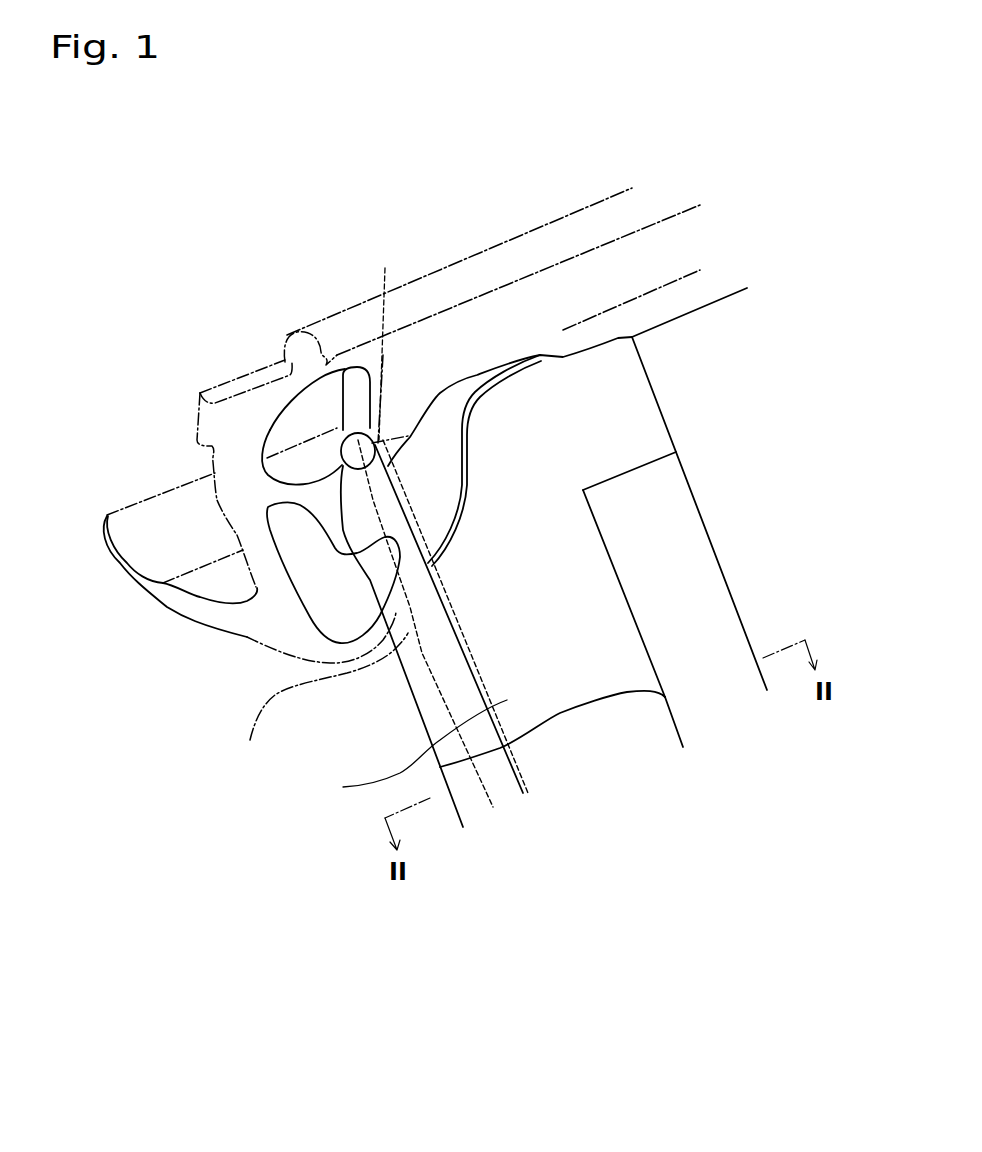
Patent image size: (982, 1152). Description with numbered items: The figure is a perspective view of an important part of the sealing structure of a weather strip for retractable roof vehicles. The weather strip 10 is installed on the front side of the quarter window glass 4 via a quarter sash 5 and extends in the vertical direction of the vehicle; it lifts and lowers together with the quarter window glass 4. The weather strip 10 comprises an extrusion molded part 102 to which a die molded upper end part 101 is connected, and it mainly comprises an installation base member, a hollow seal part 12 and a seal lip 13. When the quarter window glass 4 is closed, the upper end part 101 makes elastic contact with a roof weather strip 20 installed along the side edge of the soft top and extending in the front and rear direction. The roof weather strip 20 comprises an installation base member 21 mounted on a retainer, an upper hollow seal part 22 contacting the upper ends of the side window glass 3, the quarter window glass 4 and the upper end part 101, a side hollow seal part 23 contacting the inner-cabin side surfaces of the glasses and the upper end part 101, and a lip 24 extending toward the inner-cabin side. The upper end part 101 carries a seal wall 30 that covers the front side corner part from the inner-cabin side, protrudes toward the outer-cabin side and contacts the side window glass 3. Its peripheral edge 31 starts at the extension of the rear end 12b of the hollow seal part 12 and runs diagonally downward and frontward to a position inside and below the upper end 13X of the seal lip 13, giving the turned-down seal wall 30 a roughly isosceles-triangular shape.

The side window glass 3 is at (423, 652).
The quarter window glass 4 is at (771, 421).
The quarter sash 5 is at (688, 708).
The weather strip 10 is at (454, 842).
The hollow seal part 12 is at (585, 682).
The rear end of the hollow seal part 12b is at (668, 705).
The seal lip 13 is at (420, 687).
The upper end of the seal lip 13X is at (347, 432).
The roof weather strip 20 is at (204, 675).
The installation base member 21 is at (248, 407).
The upper hollow seal part 22 is at (383, 406).
The side hollow seal part 23 is at (323, 702).
The lip 24 is at (113, 545).
The seal wall 30 is at (443, 432).
The peripheral edge 31 is at (468, 473).
The upper end part 101 is at (403, 752).
The extrusion molded part 102 is at (548, 768).